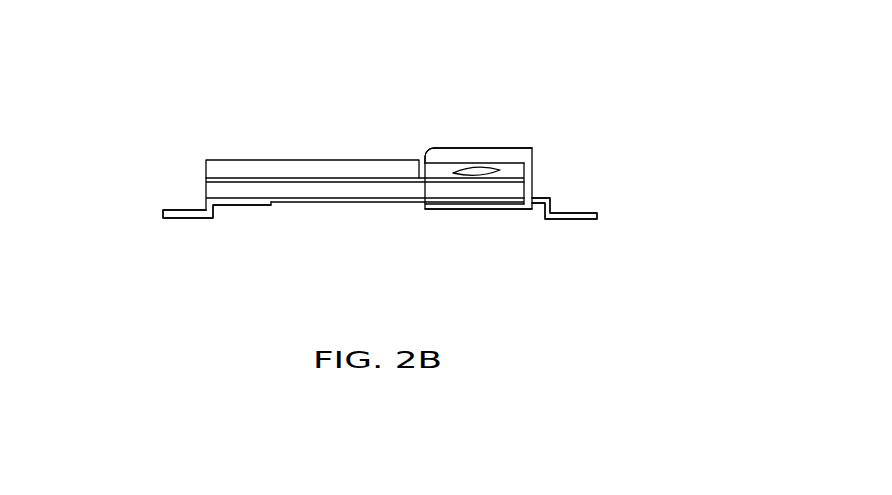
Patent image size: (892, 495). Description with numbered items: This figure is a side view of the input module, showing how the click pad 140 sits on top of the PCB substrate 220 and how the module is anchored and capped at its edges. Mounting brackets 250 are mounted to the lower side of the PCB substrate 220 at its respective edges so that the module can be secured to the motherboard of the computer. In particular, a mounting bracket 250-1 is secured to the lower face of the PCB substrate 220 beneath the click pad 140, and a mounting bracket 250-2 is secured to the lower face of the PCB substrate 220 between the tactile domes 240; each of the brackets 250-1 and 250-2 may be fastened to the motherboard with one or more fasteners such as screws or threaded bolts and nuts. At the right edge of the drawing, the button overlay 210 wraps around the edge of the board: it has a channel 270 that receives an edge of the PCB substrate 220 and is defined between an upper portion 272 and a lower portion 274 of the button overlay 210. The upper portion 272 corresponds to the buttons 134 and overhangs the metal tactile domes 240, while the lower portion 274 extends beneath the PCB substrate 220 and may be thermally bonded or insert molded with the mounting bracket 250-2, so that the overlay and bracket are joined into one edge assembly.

The buttons 134 is at (460, 148).
The click pad 140 is at (262, 160).
The button overlay 210 is at (487, 148).
The PCB substrate 220 is at (315, 188).
The tactile domes 240 is at (505, 170).
The mounting brackets 250 is at (190, 218).
The mounting bracket 250-1 is at (175, 218).
The mounting bracket 250-2 is at (583, 219).
The channel 270 is at (533, 175).
The upper portion 272 is at (517, 148).
The lower portion 274 is at (472, 209).